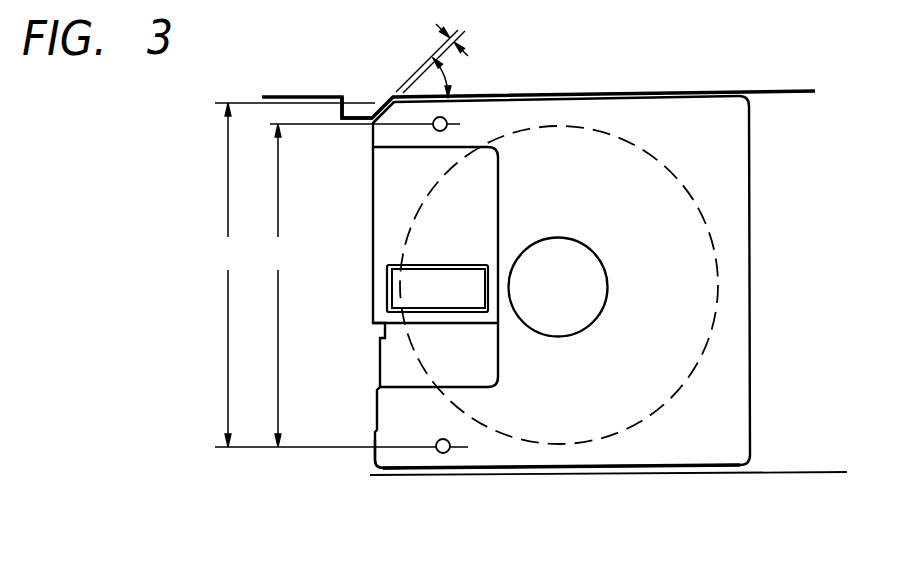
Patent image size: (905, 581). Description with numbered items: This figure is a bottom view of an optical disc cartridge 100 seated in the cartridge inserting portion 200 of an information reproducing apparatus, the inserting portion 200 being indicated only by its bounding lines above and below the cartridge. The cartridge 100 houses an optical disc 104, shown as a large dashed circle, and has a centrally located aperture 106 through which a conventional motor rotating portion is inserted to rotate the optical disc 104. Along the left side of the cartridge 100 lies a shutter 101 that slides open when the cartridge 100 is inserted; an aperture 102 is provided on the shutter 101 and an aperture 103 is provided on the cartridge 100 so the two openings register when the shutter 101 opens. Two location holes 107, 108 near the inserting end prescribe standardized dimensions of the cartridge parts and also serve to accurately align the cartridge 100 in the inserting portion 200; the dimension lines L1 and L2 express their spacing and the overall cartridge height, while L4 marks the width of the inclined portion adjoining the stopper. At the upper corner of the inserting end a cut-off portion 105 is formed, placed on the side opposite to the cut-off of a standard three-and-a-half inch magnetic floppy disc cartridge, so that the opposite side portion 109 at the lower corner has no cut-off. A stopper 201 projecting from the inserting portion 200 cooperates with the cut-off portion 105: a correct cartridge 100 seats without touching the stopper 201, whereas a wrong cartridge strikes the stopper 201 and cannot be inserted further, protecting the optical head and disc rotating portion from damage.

The cartridge 100 is at (727, 176).
The shutter 101 is at (373, 203).
The aperture 102 is at (387, 278).
The aperture 103 is at (453, 266).
The optical disc 104 is at (685, 380).
The cut-off portion 105 is at (377, 122).
The aperture 106 is at (568, 262).
The location hole 107 is at (438, 131).
The location hole 108 is at (445, 453).
The opposite side portion 109 is at (373, 455).
The cartridge inserting portion 200 is at (658, 58).
The stopper 201 is at (358, 112).
The distance between positioning holes L1 is at (361, 285).
The cartridge height L2 is at (340, 275).
The inclined portion width L4 is at (438, 46).